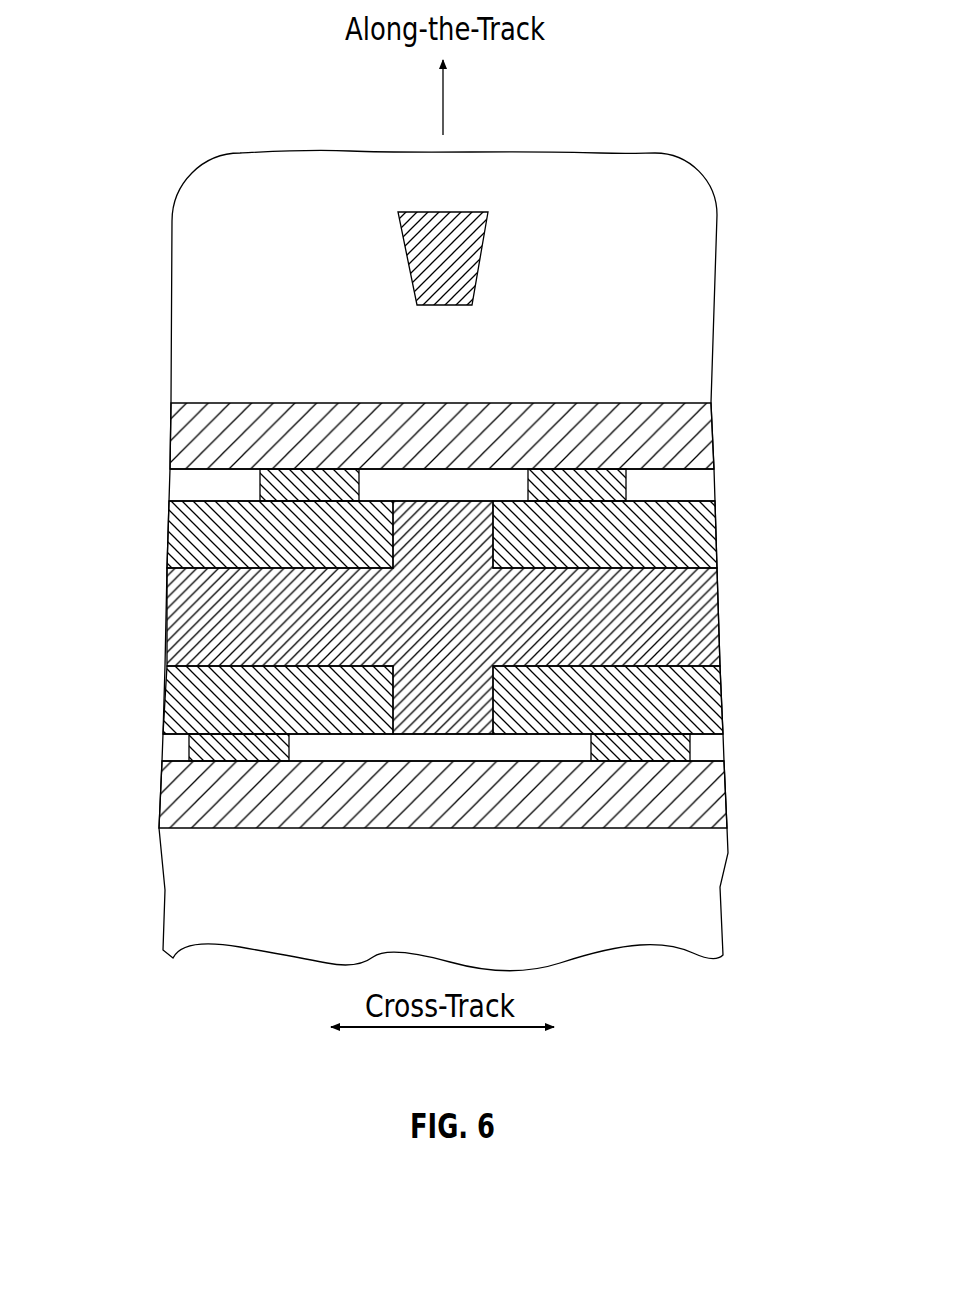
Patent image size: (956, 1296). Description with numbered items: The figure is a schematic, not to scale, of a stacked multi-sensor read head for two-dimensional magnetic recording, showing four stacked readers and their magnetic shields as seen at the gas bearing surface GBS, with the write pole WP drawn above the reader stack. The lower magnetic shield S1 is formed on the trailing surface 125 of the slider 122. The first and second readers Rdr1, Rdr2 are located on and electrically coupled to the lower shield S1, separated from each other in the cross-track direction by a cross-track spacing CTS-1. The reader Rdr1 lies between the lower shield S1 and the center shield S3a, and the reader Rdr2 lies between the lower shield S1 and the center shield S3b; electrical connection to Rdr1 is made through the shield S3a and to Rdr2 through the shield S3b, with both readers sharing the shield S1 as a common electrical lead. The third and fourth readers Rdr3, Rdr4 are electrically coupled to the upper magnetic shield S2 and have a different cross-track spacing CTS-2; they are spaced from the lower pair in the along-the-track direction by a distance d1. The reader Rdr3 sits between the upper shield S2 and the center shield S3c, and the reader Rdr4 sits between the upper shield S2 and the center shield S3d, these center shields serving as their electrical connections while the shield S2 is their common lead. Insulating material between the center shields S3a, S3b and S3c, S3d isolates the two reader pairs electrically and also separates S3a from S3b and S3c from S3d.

The slider 122 is at (682, 888).
The trailing surface 125 is at (166, 836).
The write pole WP is at (463, 255).
The gas bearing surface GBS is at (685, 291).
The lower magnetic shield S1 is at (690, 795).
The upper magnetic shield S2 is at (647, 447).
The center magnetic shield S3a is at (192, 700).
The center magnetic shield S3b is at (700, 712).
The center magnetic shield S3c is at (185, 538).
The center magnetic shield S3d is at (705, 542).
The reader Rdr1 is at (195, 750).
The reader Rdr2 is at (677, 747).
The reader Rdr3 is at (290, 487).
The reader Rdr4 is at (617, 492).
The cross-track spacing CTS-1 is at (640, 830).
The cross-track spacing CTS-2 is at (577, 470).
The distance d1 is at (170, 485).